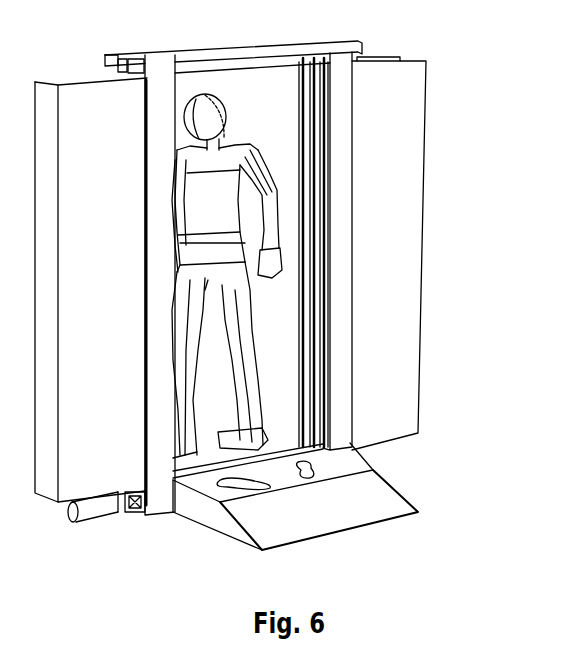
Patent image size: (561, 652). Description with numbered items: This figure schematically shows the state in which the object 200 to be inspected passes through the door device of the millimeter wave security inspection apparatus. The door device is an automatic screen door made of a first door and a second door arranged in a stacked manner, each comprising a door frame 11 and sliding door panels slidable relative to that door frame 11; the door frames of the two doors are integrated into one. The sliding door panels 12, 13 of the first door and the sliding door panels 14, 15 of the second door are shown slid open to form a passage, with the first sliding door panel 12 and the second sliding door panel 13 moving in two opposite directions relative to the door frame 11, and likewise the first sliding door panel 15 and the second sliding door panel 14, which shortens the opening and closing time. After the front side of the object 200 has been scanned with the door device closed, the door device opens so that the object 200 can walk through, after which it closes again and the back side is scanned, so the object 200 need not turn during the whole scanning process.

The door frame 11 is at (340, 140).
The first sliding door panel 12 is at (385, 57).
The second sliding door panel 13 is at (48, 112).
The second sliding door panel 14 is at (97, 443).
The first sliding door panel 15 is at (395, 340).
The object to be inspected 200 is at (190, 242).